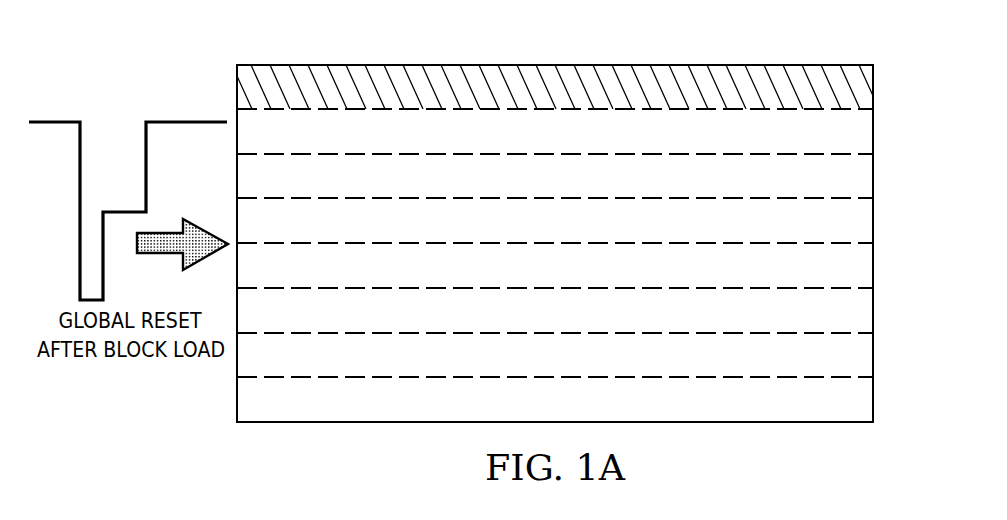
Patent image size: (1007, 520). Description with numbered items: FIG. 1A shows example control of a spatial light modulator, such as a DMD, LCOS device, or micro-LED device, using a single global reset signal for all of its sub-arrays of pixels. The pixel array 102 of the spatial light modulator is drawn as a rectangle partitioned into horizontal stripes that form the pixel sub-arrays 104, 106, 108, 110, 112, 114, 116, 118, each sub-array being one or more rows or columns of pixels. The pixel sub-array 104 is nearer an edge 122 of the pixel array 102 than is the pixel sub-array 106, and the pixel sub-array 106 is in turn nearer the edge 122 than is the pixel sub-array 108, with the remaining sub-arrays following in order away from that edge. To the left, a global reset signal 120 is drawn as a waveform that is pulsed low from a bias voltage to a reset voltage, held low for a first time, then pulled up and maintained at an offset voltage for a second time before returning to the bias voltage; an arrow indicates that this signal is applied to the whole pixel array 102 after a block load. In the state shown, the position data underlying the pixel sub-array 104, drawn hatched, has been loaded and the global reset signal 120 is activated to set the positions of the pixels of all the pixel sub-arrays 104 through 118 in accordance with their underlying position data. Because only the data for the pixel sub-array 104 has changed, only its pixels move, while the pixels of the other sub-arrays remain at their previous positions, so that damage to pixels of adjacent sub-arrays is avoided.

The pixel array 102 is at (415, 65).
The pixel sub-array 104 is at (866, 84).
The pixel sub-array 106 is at (866, 129).
The pixel sub-array 108 is at (866, 173).
The pixel sub-array 110 is at (866, 218).
The pixel sub-array 112 is at (866, 268).
The pixel sub-array 114 is at (866, 312).
The pixel sub-array 116 is at (866, 357).
The pixel sub-array 118 is at (866, 402).
The global reset signal 120 is at (177, 121).
The edge 122 is at (593, 65).